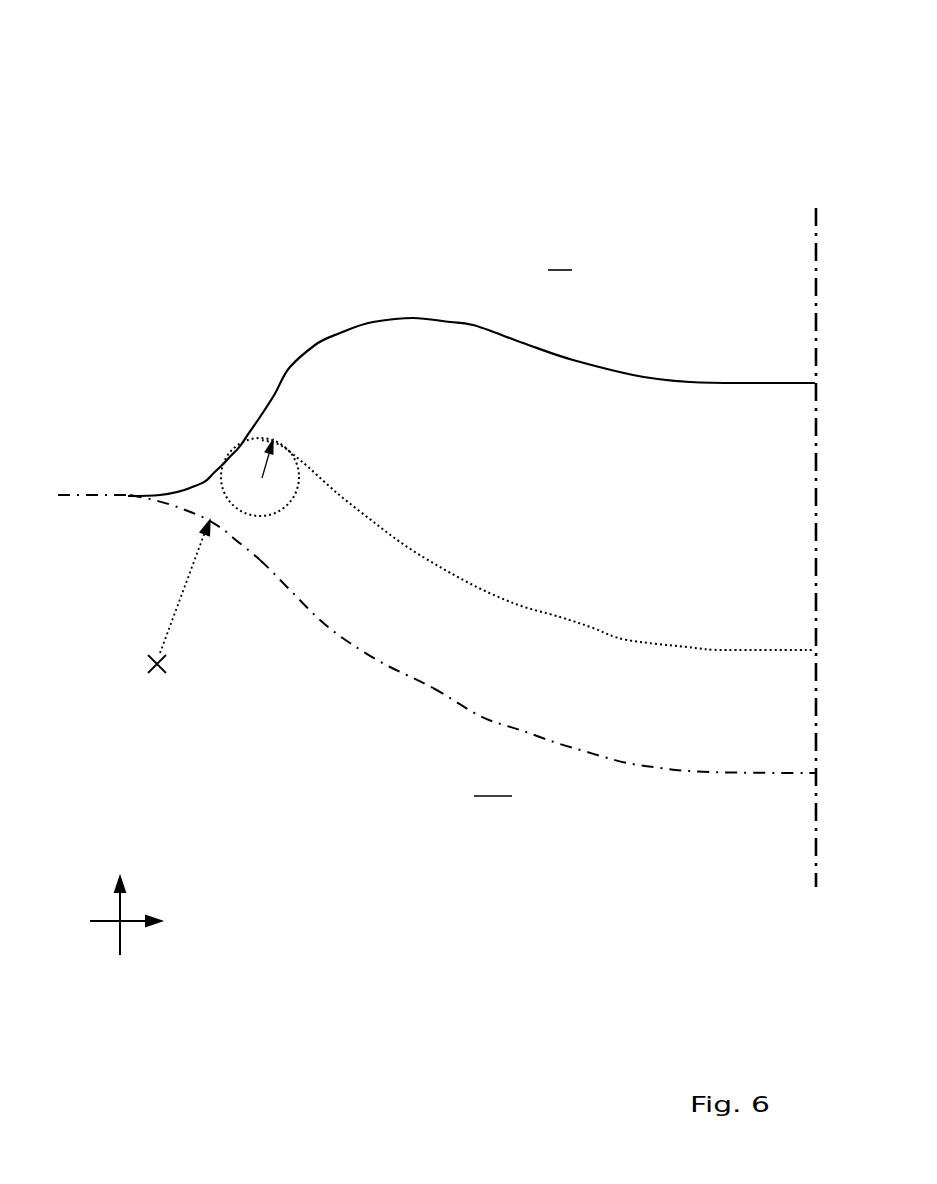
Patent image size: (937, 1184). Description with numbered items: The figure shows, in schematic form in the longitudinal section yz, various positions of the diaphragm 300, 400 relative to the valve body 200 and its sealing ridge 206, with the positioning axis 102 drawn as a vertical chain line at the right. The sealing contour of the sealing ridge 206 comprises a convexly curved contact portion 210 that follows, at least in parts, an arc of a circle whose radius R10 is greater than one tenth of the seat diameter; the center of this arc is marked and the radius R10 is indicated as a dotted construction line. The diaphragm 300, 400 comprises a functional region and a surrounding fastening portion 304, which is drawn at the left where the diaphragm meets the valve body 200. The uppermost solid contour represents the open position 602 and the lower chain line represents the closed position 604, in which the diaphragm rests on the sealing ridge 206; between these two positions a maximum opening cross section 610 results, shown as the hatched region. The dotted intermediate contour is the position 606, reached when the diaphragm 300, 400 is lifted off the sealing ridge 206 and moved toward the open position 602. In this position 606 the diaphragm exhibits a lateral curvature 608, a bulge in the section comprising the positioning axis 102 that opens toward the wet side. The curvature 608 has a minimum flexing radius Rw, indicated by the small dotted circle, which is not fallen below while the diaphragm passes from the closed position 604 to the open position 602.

The diaphragm 300 is at (182, 88).
The diaphragm 400 is at (428, 578).
The positioning axis 102 is at (813, 323).
The valve body 200 is at (435, 613).
The sealing ridge 206 is at (604, 752).
The contact portion 210 is at (226, 550).
The fastening portion 304 is at (87, 490).
The open position 602 is at (472, 323).
The closed position 604 is at (313, 603).
The position of the diaphragm 606 is at (427, 560).
The lateral curvature 608 is at (256, 428).
The maximum opening cross section 610 is at (357, 387).
The radius of the contact portion R10 is at (177, 597).
The minimum flexing radius Rw is at (260, 462).